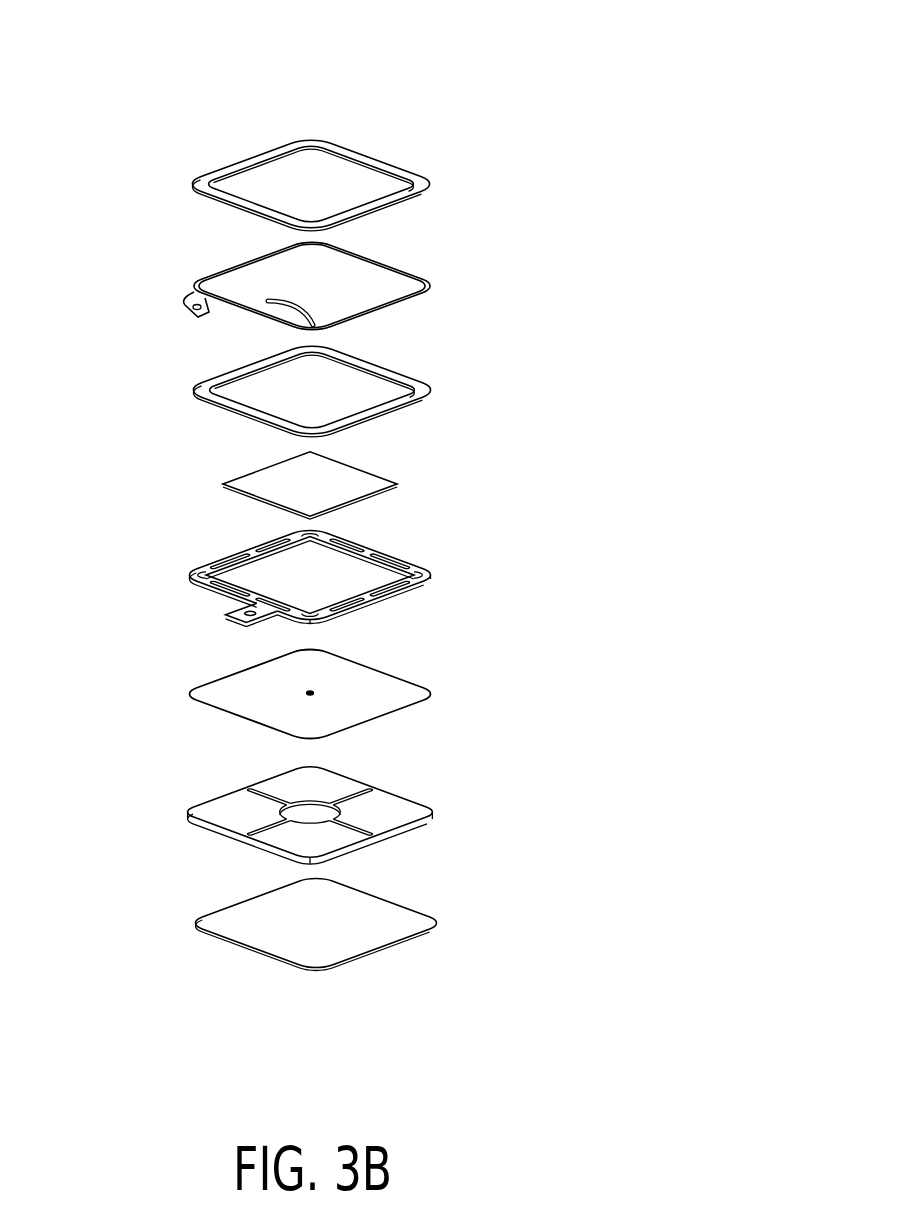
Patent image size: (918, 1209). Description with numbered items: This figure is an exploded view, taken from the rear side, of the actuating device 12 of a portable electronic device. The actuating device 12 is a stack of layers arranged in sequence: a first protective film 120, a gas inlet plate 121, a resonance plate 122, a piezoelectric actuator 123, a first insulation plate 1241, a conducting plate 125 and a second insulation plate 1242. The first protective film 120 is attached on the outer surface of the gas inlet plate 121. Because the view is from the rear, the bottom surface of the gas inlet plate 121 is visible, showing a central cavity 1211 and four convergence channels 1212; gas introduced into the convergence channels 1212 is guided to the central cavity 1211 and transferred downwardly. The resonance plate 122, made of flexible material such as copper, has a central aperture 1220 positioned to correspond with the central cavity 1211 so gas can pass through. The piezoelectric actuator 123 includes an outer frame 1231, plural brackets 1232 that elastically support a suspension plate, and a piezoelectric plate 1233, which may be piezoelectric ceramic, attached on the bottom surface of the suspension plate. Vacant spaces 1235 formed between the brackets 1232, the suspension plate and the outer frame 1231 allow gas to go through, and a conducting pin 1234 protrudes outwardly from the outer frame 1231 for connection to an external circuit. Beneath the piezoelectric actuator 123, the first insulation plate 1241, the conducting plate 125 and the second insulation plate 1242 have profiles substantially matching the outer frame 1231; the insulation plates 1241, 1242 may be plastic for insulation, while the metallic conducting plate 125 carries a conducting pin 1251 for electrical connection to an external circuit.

The actuating device 12 is at (565, 46).
The first protective film 120 is at (295, 925).
The gas inlet plate 121 is at (203, 812).
The central cavity 1211 is at (307, 810).
The convergence channel 1212 is at (355, 826).
The resonance plate 122 is at (208, 693).
The central aperture 1220 is at (314, 692).
The piezoelectric actuator 123 is at (177, 544).
The outer frame 1231 is at (432, 576).
The bracket 1232 is at (360, 553).
The piezoelectric plate 1233 is at (270, 478).
The conducting pin 1234 is at (255, 609).
The vacant space 1235 is at (414, 575).
The first insulation plate 1241 is at (195, 389).
The second insulation plate 1242 is at (196, 181).
The conducting plate 125 is at (192, 283).
The conducting pin 1251 is at (186, 305).